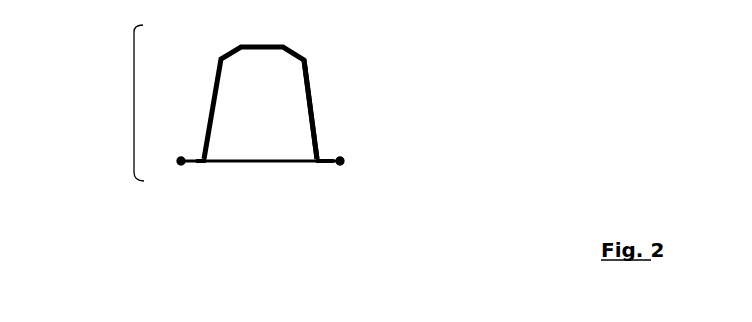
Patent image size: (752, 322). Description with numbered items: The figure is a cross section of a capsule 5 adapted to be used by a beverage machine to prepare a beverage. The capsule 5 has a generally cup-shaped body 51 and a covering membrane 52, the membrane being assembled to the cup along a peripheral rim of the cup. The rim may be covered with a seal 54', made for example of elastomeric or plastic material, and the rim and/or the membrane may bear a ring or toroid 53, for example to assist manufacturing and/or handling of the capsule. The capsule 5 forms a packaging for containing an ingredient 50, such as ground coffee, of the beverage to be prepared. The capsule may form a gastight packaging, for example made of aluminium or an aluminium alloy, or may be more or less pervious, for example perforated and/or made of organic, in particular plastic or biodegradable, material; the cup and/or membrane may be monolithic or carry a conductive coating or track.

The capsule 5 is at (134, 45).
The ingredient 50 is at (260, 103).
The cup-shaped body 51 is at (312, 92).
The covering membrane 52 is at (263, 163).
The ring or toroid 53 is at (181, 165).
The seal 54' is at (266, 136).